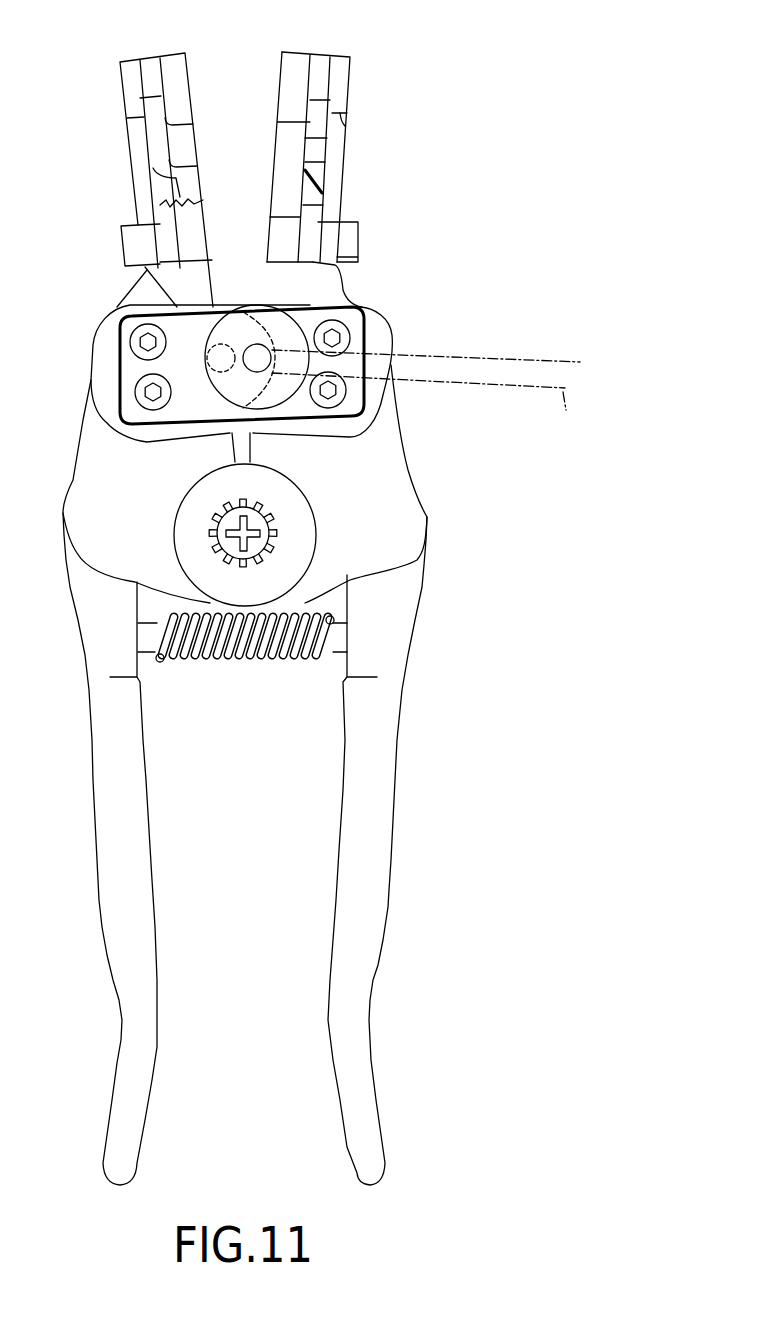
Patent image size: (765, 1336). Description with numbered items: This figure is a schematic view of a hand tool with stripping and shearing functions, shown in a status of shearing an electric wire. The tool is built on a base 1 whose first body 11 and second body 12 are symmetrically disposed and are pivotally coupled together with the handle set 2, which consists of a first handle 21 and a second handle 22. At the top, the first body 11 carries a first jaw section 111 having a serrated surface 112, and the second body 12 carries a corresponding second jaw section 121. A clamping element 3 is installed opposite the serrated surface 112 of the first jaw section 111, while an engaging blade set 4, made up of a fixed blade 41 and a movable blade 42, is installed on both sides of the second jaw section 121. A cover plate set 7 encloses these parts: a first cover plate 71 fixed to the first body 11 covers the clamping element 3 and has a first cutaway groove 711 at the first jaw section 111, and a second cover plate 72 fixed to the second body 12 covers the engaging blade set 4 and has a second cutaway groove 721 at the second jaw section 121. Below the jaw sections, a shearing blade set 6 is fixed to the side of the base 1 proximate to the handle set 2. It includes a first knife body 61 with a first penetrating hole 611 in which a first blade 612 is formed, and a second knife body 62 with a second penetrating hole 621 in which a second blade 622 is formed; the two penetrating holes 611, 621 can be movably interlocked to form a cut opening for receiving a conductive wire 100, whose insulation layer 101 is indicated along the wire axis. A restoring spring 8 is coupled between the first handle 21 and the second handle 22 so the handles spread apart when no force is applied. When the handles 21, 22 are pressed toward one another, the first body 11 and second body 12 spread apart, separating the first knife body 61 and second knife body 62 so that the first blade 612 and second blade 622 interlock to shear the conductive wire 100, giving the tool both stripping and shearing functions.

The base 1 is at (160, 44).
The handle set 2 is at (400, 843).
The clamping element 3 is at (158, 118).
The engaging blade set 4 is at (328, 53).
The shearing blade set 6 is at (112, 398).
The cover plate set 7 is at (118, 53).
The restoring spring 8 is at (255, 662).
The first body 11 is at (183, 72).
The second body 12 is at (293, 60).
The first handle 21 is at (115, 828).
The second handle 22 is at (380, 905).
The fixed blade 41 is at (327, 78).
The movable blade 42 is at (318, 203).
The first knife body 61 is at (128, 363).
The second knife body 62 is at (353, 388).
The first cover plate 71 is at (132, 108).
The second cover plate 72 is at (347, 92).
The conductive wire 100 is at (442, 355).
The insulation layer 101 is at (517, 362).
The first jaw section 111 is at (160, 212).
The serrated surface 112 is at (175, 200).
The second jaw section 121 is at (283, 218).
The first penetrating hole 611 is at (218, 357).
The first blade 612 is at (143, 268).
The second penetrating hole 621 is at (256, 344).
The second blade 622 is at (330, 312).
The first cutaway groove 711 is at (138, 118).
The second cutaway groove 721 is at (343, 117).